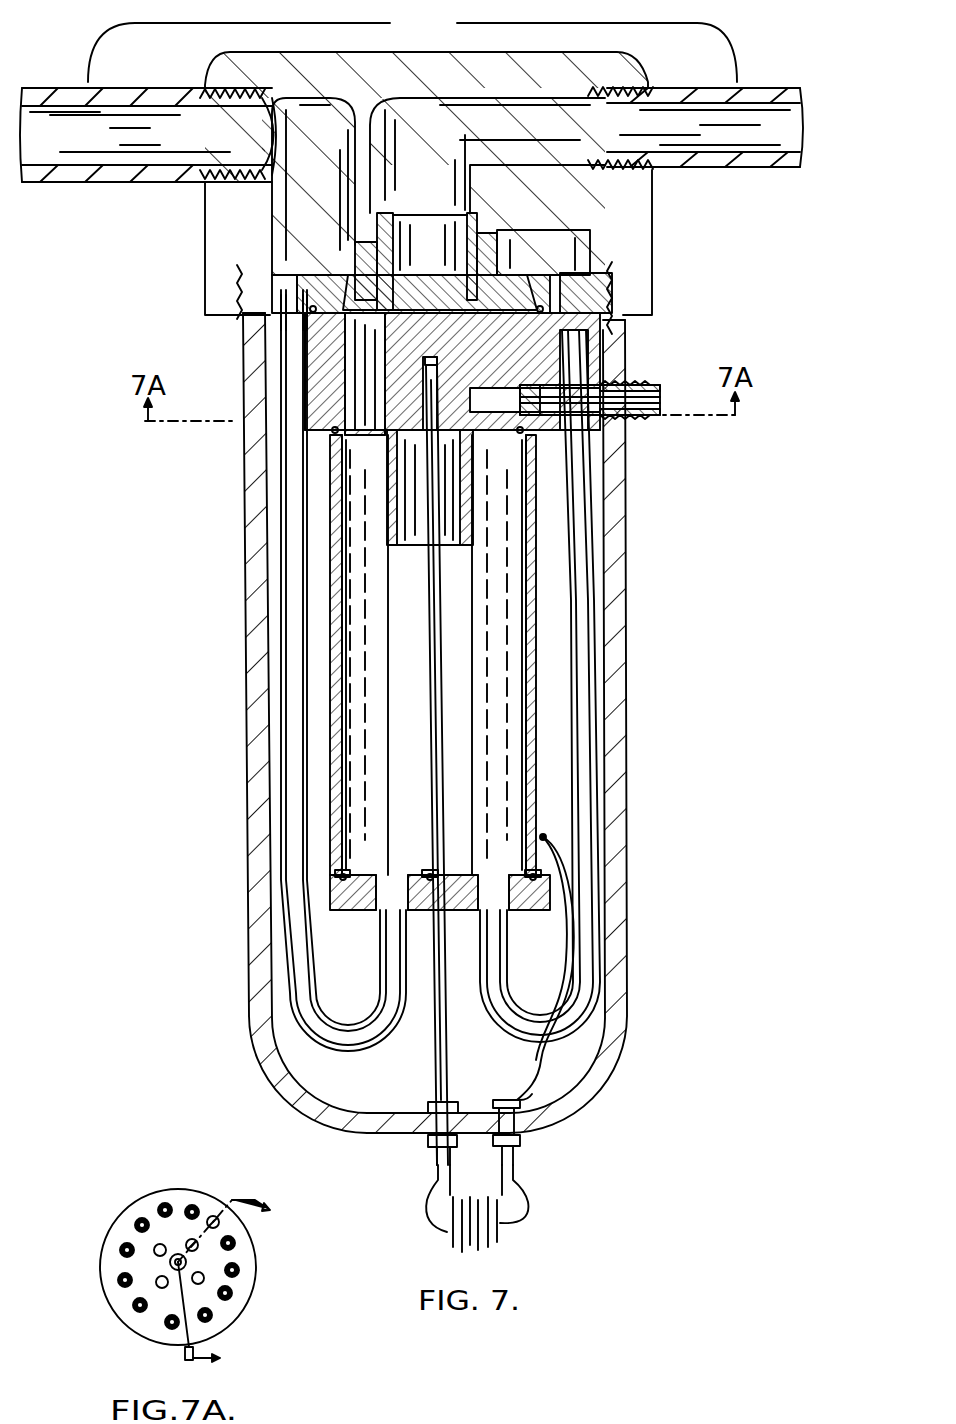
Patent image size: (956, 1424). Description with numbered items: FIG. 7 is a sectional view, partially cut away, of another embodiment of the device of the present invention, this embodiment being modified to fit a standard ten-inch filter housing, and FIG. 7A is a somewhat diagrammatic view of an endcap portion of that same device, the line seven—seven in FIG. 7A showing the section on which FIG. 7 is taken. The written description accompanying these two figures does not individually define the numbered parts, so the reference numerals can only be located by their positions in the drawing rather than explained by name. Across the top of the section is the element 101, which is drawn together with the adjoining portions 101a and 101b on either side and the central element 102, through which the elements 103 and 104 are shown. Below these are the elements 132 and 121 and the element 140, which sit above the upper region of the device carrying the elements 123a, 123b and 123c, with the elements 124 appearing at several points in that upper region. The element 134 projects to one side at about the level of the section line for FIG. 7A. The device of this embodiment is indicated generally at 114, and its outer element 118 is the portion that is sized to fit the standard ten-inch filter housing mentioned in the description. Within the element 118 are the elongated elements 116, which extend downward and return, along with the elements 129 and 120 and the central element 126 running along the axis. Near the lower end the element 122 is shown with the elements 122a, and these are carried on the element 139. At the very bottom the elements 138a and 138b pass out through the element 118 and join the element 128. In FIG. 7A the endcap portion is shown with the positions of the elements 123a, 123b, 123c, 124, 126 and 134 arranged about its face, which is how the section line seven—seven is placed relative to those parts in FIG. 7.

In FIG. 7, the pipe line 101 is at (412, 41).
In FIG. 7, the upstream pipe section 101a is at (135, 85).
In FIG. 7, the downstream pipe section 101b is at (748, 82).
In FIG. 7, the tee fitting body 102 is at (640, 203).
In FIG. 7, the elbow passage 103 is at (328, 80).
In FIG. 7, the elbow passage 104 is at (498, 117).
In FIG. 7, the coupling nut 132 is at (285, 268).
In FIG. 7, the nipple 121 is at (285, 280).
In FIG. 7, the adapter plate 140 is at (458, 288).
In FIG. 7, the head block bore 123a is at (430, 360).
In FIG. 7A, the head block bore 123a is at (155, 1248).
In FIG. 7, the head block bore 123b is at (466, 452).
In FIG. 7A, the head block bore 123b is at (158, 1285).
In FIG. 7, the head block bore 123c is at (300, 340).
In FIG. 7A, the head block bore 123c is at (192, 1205).
In FIG. 7, the O-ring seal 124 is at (283, 338).
In FIG. 7A, the O-ring seal 124 is at (152, 1203).
In FIG. 7, the thermowell tube 134 is at (655, 390).
In FIG. 7A, the thermowell tube 134 is at (185, 1356).
In FIG. 7, the housing 118 is at (628, 575).
In FIG. 7, the tube 116 is at (303, 615).
In FIG. 7, the inner sleeve 129 is at (387, 588).
In FIG. 7, the outer sleeve 120 is at (528, 576).
In FIG. 7, the rod 126 is at (452, 625).
In FIG. 7A, the rod 126 is at (172, 1262).
In FIG. 7, the sensor assembly 114 is at (230, 705).
In FIG. 7, the heater wire 122 is at (465, 845).
In FIG. 7, the seal ring 122a is at (407, 862).
In FIG. 7, the support plate 139 is at (578, 898).
In FIG. 7, the terminal 138a is at (430, 1152).
In FIG. 7, the terminal 138b is at (518, 1157).
In FIG. 7, the cable 128 is at (500, 1223).